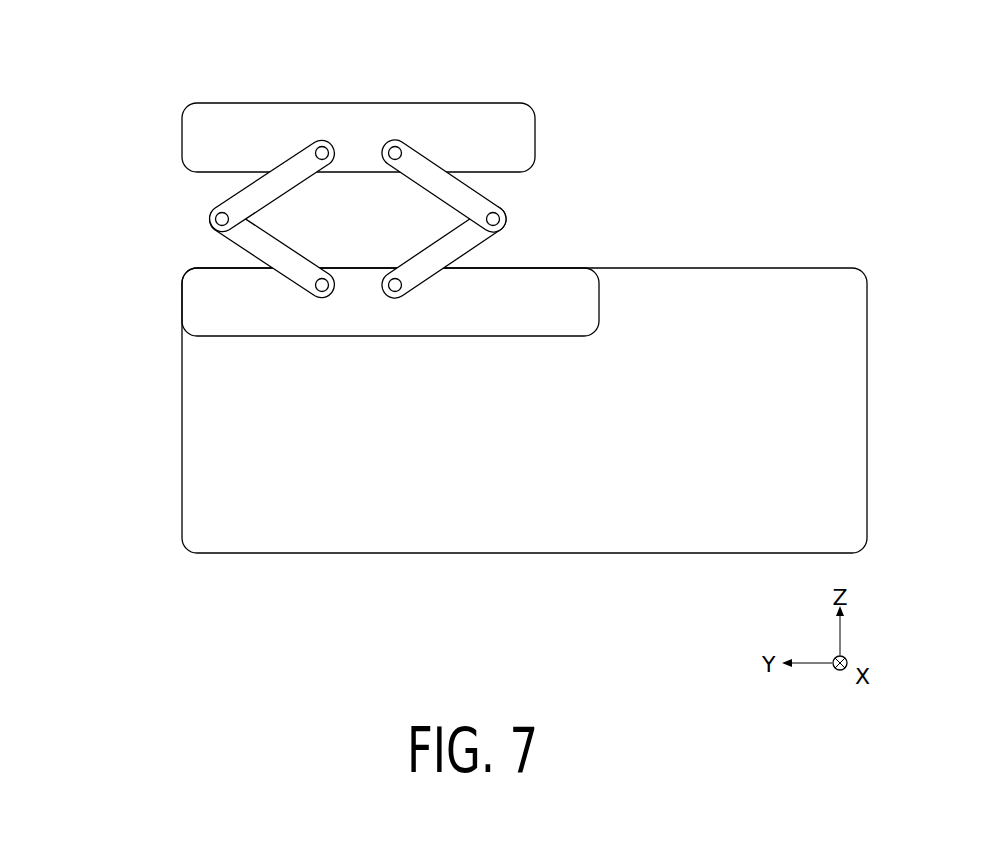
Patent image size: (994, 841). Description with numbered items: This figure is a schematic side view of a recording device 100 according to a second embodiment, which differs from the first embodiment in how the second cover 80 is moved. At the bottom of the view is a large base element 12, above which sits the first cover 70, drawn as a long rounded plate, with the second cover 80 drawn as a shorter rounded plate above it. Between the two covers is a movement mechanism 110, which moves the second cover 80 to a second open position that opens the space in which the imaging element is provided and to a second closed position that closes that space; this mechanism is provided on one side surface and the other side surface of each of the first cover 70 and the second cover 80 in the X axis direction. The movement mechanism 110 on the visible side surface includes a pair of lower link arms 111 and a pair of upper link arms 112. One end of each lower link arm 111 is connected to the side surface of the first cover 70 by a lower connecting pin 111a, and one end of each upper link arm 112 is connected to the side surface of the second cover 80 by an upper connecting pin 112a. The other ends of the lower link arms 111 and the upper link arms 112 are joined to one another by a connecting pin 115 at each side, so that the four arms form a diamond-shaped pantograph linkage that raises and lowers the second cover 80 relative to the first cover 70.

The recording device 100 is at (782, 96).
The base 12 is at (182, 455).
The first cover 70 is at (182, 300).
The second cover 80 is at (182, 133).
The movement mechanism 110 is at (328, 220).
The lower link arm 111 is at (288, 281).
The lower connecting pin 111a is at (395, 297).
The upper link arm 112 is at (288, 159).
The upper connecting pin 112a is at (395, 142).
The connecting pin 115 is at (213, 217).